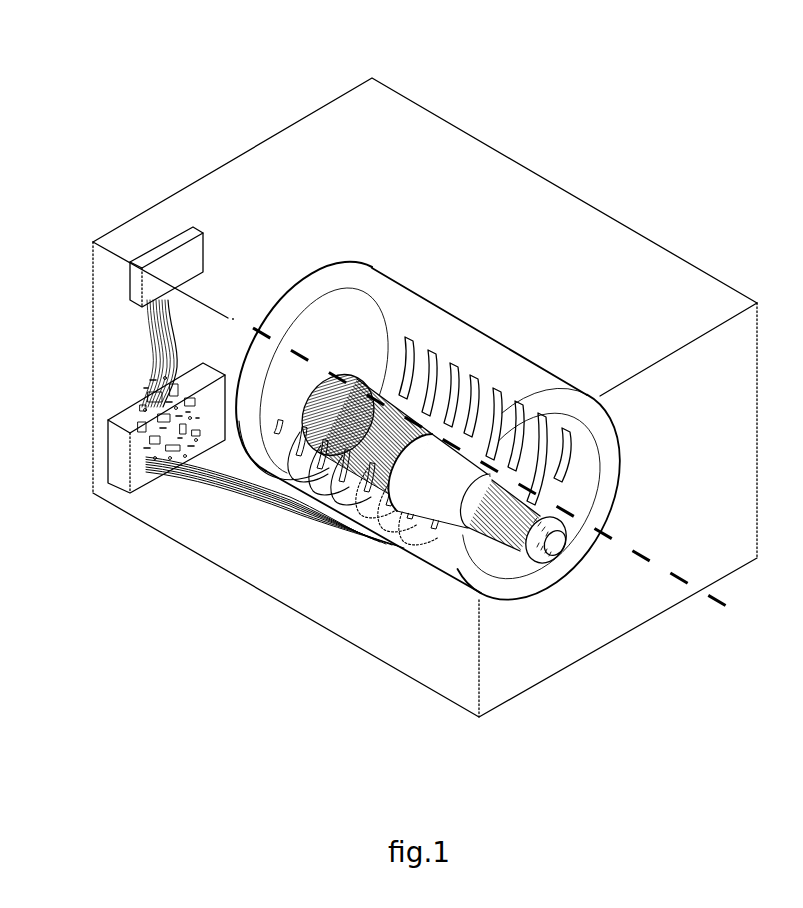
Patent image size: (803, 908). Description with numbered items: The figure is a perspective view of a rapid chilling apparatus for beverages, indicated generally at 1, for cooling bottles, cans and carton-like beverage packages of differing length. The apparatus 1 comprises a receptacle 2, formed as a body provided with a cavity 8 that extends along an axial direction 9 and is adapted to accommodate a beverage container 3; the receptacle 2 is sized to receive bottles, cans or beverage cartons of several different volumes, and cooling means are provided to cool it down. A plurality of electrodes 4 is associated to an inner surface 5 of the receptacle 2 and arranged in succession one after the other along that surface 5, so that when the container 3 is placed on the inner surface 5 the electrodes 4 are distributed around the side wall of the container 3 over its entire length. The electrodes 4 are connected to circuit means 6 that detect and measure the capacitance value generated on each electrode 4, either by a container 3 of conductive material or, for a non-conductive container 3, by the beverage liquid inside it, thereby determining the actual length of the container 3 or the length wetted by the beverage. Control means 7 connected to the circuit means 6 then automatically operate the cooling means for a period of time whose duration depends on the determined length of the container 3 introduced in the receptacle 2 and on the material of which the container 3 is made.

The rapid chilling apparatus for beverages 1 is at (660, 141).
The receptacle 2 is at (413, 273).
The beverage container 3 is at (460, 405).
The electrodes 4 is at (428, 349).
The inner surface 5 is at (593, 458).
The circuit means 6 is at (110, 478).
The control means 7 is at (185, 255).
The cavity 8 is at (356, 299).
The axial direction 9 is at (253, 326).